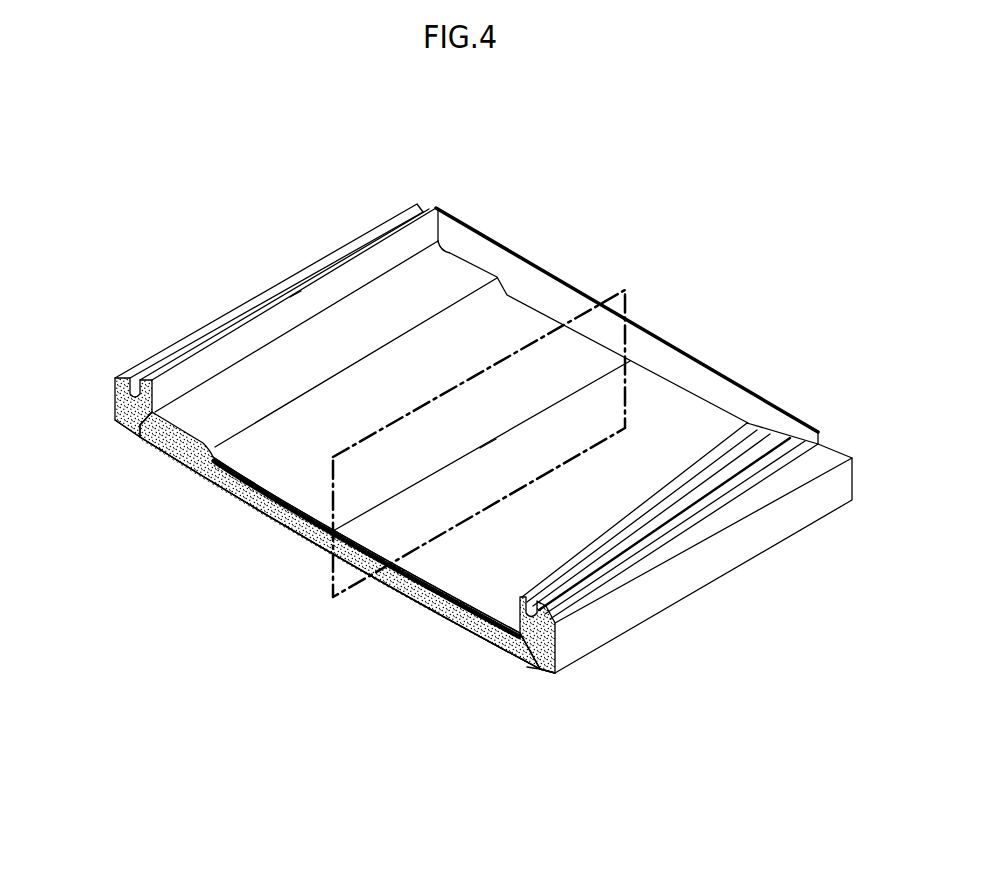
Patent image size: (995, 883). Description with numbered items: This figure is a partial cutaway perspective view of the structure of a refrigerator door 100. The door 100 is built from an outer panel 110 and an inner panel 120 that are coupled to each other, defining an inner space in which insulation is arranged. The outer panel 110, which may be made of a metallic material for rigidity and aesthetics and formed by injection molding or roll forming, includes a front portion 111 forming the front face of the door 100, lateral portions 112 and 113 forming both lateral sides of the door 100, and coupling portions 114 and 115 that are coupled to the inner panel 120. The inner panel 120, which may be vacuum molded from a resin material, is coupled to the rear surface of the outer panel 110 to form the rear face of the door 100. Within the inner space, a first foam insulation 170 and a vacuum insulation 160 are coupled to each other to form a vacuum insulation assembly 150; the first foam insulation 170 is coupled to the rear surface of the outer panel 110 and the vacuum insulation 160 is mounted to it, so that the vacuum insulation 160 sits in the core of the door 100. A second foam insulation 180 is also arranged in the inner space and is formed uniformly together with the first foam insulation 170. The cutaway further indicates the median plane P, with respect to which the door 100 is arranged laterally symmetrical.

The door 100 is at (475, 150).
The outer panel 110 is at (312, 568).
The front portion 111 is at (276, 528).
The lateral portion 112 is at (553, 653).
The lateral portion 113 is at (113, 402).
The coupling portion 114 is at (562, 620).
The coupling portion 115 is at (122, 377).
The inner panel 120 is at (258, 368).
The vacuum insulation assembly 150 is at (472, 698).
The vacuum insulation 160 is at (467, 623).
The first foam insulation 170 is at (403, 600).
The second foam insulation 180 is at (537, 670).
The median plane P is at (622, 292).